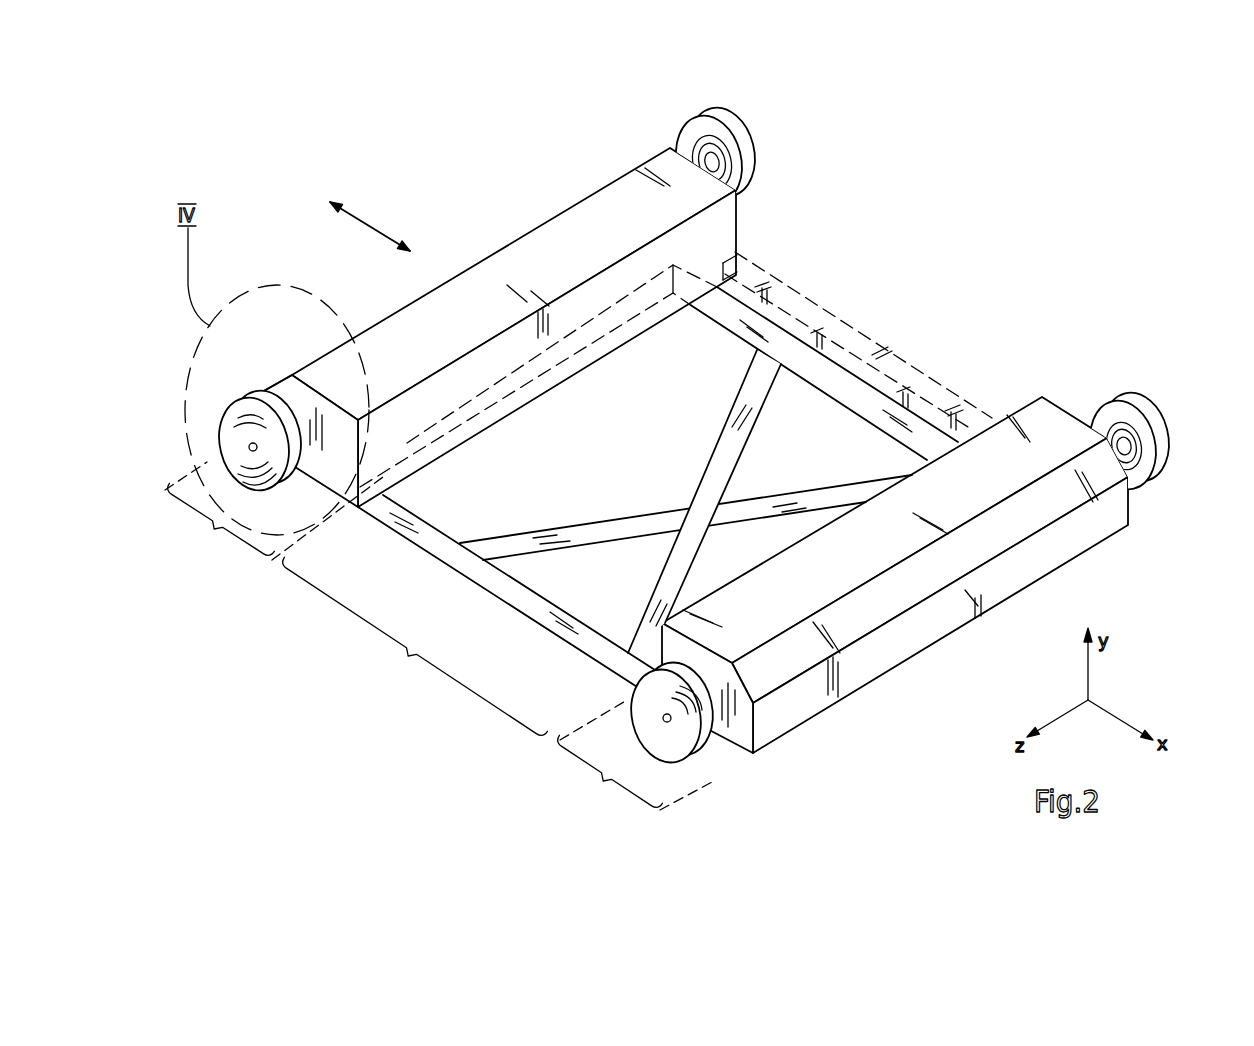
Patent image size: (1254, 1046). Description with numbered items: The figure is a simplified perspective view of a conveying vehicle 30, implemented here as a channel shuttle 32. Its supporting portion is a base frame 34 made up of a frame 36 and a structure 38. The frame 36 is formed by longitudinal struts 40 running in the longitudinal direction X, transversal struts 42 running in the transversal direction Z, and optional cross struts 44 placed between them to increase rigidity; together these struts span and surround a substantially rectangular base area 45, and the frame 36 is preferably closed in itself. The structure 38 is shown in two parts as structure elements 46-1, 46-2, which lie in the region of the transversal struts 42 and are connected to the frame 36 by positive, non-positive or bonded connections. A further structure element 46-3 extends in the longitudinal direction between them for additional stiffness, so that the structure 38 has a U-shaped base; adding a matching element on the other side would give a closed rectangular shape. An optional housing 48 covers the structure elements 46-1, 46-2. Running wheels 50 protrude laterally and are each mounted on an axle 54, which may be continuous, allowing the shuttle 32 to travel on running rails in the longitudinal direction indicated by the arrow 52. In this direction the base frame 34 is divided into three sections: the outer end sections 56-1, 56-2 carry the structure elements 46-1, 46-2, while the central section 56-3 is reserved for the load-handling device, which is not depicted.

The conveying vehicle 30 is at (699, 453).
The shuttle 32 is at (699, 453).
The base frame 34 is at (952, 294).
The frame 36 is at (461, 532).
The structure 38 is at (560, 208).
The longitudinal struts 40 is at (712, 310).
The transversal struts 42 is at (567, 357).
The cross struts 44 is at (768, 496).
The base area 45 is at (648, 478).
The structure element 46-1 is at (627, 214).
The structure element 46-2 is at (1063, 440).
The further structure element 46-3 is at (951, 388).
The housing 48 is at (327, 350).
The running wheels 50 is at (745, 132).
The arrow 52 is at (360, 220).
The axle 54 is at (252, 446).
The first section 56-1 is at (219, 513).
The second section 56-2 is at (635, 755).
The third central section 56-3 is at (409, 606).